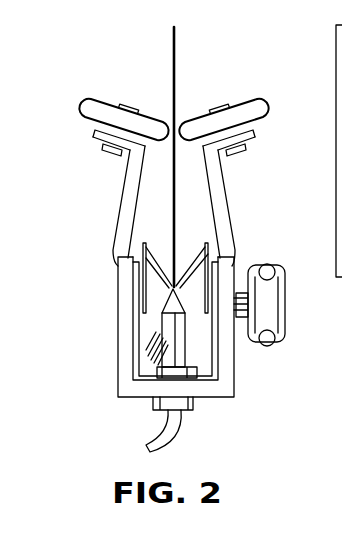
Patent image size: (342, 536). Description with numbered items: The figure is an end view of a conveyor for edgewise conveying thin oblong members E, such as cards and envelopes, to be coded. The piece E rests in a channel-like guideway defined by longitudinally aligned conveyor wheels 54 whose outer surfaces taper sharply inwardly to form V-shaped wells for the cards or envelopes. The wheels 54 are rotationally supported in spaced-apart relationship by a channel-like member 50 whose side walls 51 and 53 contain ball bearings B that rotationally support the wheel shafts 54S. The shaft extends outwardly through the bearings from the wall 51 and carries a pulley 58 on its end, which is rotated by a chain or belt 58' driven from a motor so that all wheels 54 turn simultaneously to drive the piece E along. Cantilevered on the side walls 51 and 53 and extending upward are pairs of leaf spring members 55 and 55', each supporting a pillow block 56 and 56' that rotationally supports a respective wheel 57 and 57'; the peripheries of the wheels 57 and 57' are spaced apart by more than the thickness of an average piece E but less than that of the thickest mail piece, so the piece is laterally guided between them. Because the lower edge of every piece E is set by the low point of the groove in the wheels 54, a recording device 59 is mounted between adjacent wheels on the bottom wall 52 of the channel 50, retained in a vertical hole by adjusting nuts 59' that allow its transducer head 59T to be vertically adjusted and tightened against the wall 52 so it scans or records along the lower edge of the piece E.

The thin oblong member E is at (177, 32).
The channel-like member 50 is at (118, 357).
The side wall 51 is at (234, 391).
The bottom wall 52 is at (221, 391).
The side wall 53 is at (133, 293).
The conveyor wheel 54 is at (198, 262).
The wheel shaft 54S is at (128, 292).
The leaf spring member 55 is at (239, 206).
The leaf spring member 55' is at (106, 206).
The pillow block 56 is at (249, 147).
The pillow block 56' is at (96, 151).
The wheel 57 is at (223, 104).
The wheel 57' is at (102, 119).
The pulley 58 is at (280, 303).
The chain or belt 58' is at (291, 315).
The recording device 59 is at (147, 379).
The adjusting nut 59' is at (191, 431).
The transducer head 59T is at (173, 292).
The ball bearing B is at (118, 323).